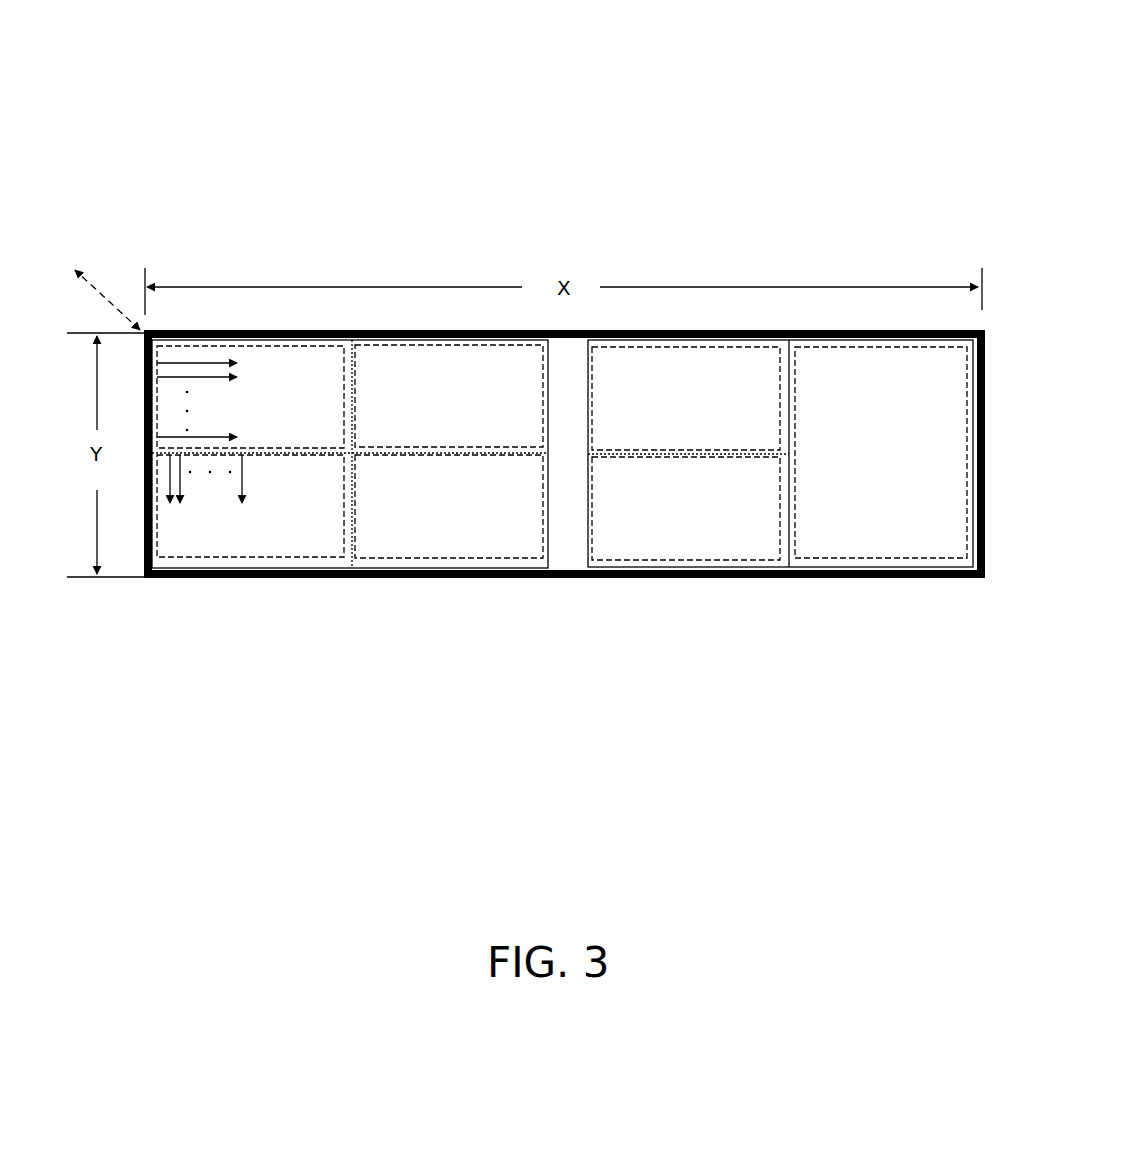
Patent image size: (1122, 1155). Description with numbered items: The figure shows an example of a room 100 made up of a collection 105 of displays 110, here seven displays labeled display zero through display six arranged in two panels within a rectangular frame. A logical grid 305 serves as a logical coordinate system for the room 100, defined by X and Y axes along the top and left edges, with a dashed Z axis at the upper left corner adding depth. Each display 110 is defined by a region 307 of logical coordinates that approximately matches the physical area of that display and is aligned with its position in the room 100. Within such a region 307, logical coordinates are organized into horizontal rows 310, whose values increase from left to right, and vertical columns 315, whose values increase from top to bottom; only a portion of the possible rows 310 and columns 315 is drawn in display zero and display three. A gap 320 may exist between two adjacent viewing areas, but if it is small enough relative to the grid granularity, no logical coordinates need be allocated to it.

The room 100 is at (289, 49).
The collection of displays 105 is at (498, 330).
The display 110 is at (877, 375).
The logical grid 305 is at (128, 290).
The region of logical coordinates 307 is at (330, 345).
The horizontal rows 310 is at (207, 362).
The vertical columns 315 is at (182, 465).
The gap 320 is at (572, 553).